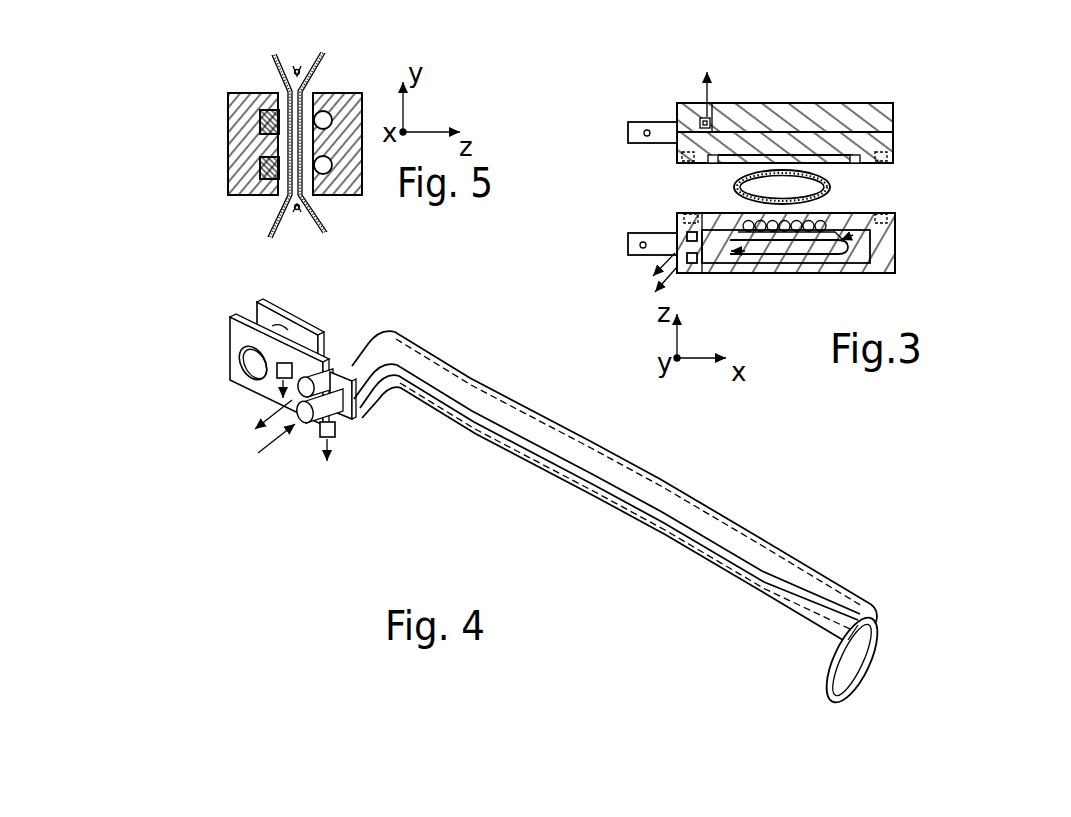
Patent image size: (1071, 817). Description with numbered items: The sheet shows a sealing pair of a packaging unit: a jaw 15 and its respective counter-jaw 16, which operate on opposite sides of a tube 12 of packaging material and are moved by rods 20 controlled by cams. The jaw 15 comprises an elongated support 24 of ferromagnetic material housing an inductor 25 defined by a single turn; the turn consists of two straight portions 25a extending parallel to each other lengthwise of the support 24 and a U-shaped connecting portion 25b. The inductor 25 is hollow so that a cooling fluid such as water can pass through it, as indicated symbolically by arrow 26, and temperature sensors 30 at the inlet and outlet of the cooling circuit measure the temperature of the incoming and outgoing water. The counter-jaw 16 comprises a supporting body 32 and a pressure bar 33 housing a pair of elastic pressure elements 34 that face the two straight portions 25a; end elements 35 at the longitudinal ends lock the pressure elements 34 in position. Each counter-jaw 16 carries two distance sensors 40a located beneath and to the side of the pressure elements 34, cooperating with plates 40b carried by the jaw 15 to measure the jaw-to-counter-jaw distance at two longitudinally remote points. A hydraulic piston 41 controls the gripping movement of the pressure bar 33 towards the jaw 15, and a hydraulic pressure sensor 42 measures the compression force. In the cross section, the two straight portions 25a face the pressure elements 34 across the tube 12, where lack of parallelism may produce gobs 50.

In FIG. 5, the tube 12 is at (270, 73).
In FIG. 3, the tube 12 is at (832, 188).
In FIG. 3, the jaw 15 is at (761, 249).
In FIG. 3, the counter-jaw 16 is at (780, 120).
In FIG. 3, the rod 20 is at (645, 130).
In FIG. 5, the elongated support 24 is at (353, 185).
In FIG. 3, the elongated support 24 is at (892, 263).
In FIG. 3, the inductor 25 is at (852, 236).
In FIG. 4, the inductor 25 is at (655, 520).
In FIG. 5, the straight portion 25a is at (325, 115).
In FIG. 4, the straight portion 25a is at (610, 500).
In FIG. 4, the U-shaped connecting portion 25b is at (867, 671).
In FIG. 3, the arrow 26 is at (798, 256).
In FIG. 3, the temperature sensor 30 is at (697, 228).
In FIG. 4, the temperature sensor 30 is at (292, 363).
In FIG. 3, the supporting body 32 is at (793, 112).
In FIG. 5, the pressure bar 33 is at (233, 170).
In FIG. 3, the pressure bar 33 is at (893, 140).
In FIG. 5, the pressure element 34 is at (233, 150).
In FIG. 3, the pressure element 34 is at (767, 157).
In FIG. 3, the end element 35 is at (855, 155).
In FIG. 3, the distance sensor 40a is at (680, 158).
In FIG. 3, the plate 40b is at (884, 214).
In FIG. 3, the hydraulic piston 41 is at (700, 104).
In FIG. 3, the hydraulic pressure sensor 42 is at (709, 118).
In FIG. 5, the gob 50 is at (297, 70).